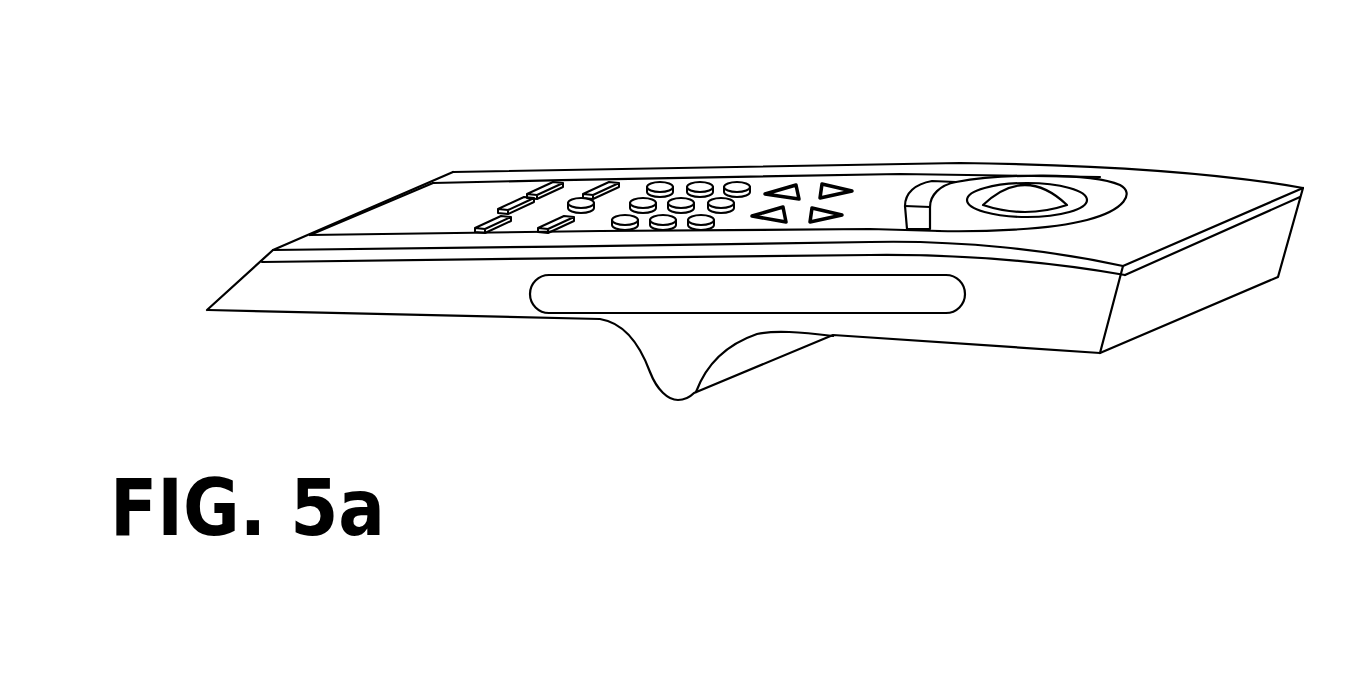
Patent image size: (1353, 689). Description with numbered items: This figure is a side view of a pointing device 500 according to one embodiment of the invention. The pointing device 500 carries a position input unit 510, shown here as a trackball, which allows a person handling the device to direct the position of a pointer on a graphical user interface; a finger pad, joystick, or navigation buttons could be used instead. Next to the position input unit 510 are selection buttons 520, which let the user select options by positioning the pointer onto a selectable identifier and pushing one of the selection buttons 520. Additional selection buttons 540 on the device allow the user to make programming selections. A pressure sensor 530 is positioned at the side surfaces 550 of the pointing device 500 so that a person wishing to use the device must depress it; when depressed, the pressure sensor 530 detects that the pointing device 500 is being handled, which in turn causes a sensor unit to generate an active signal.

The pointing device 500 is at (320, 115).
The position input unit 510 is at (1017, 191).
The selection buttons 520 is at (907, 193).
The pressure sensor 530 is at (577, 300).
The additional selection buttons 540 is at (520, 177).
The side surfaces 550 is at (422, 301).